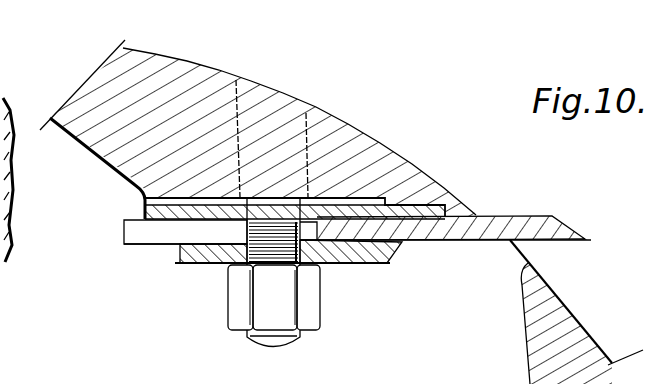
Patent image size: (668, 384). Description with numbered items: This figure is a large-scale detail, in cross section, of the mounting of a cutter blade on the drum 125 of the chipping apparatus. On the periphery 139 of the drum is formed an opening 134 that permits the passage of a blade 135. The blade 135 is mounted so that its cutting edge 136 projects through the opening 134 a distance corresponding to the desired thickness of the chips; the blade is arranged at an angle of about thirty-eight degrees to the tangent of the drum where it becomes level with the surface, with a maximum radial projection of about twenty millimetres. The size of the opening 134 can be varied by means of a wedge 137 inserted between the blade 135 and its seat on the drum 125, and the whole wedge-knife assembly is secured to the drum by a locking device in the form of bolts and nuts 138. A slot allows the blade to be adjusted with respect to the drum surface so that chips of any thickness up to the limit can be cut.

The periphery 139 is at (190, 63).
The drum 125 is at (358, 166).
The wedge 137 is at (145, 212).
The blade 135 is at (502, 215).
The cutting edge 136 is at (584, 240).
The opening 134 is at (523, 250).
The bolts and nuts 138 is at (312, 308).